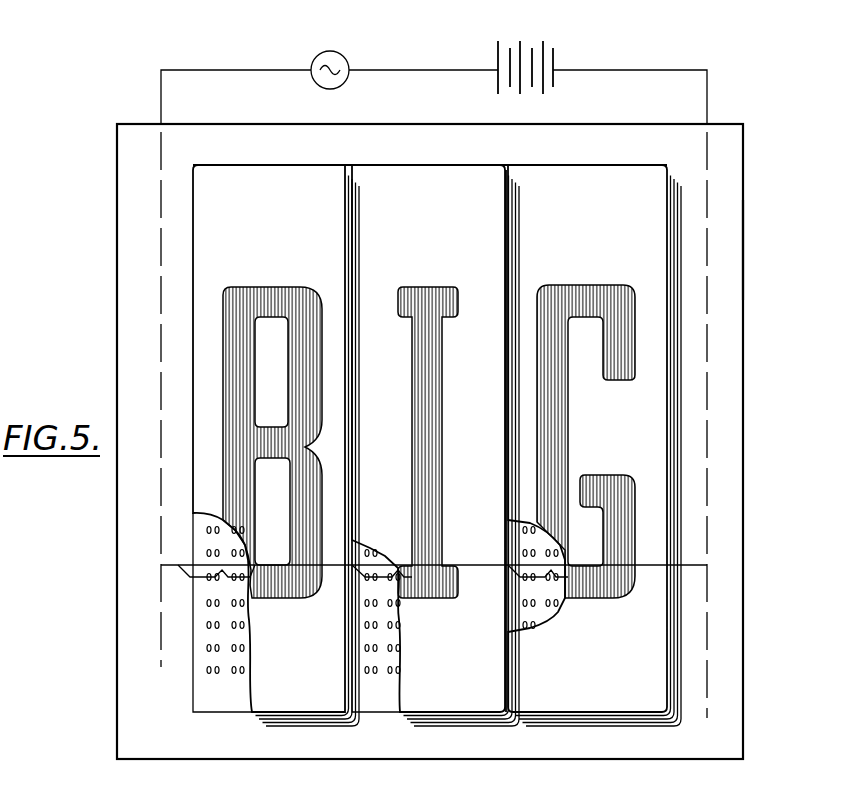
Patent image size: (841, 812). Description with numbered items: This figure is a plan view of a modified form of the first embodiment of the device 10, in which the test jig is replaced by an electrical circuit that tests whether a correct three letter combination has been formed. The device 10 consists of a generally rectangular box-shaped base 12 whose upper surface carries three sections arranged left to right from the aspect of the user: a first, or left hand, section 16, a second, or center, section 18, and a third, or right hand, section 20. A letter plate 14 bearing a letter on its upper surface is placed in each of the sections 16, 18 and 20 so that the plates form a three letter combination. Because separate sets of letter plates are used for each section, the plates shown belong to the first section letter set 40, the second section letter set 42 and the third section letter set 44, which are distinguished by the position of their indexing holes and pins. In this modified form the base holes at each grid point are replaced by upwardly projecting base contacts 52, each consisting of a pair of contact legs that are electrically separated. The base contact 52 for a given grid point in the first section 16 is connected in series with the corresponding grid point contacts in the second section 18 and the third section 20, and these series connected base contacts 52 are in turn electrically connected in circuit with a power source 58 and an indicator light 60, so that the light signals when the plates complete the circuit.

The device 10 is at (752, 184).
The base 12 is at (745, 240).
The letter plates 14 is at (323, 167).
The first section 16 is at (291, 728).
The second section 18 is at (438, 726).
The third section 20 is at (613, 726).
The first section letter set 40 is at (270, 158).
The second section letter set 42 is at (518, 197).
The third section letter set 44 is at (618, 158).
The base contacts 52 is at (204, 670).
The power source 58 is at (559, 56).
The indicator light 60 is at (345, 56).